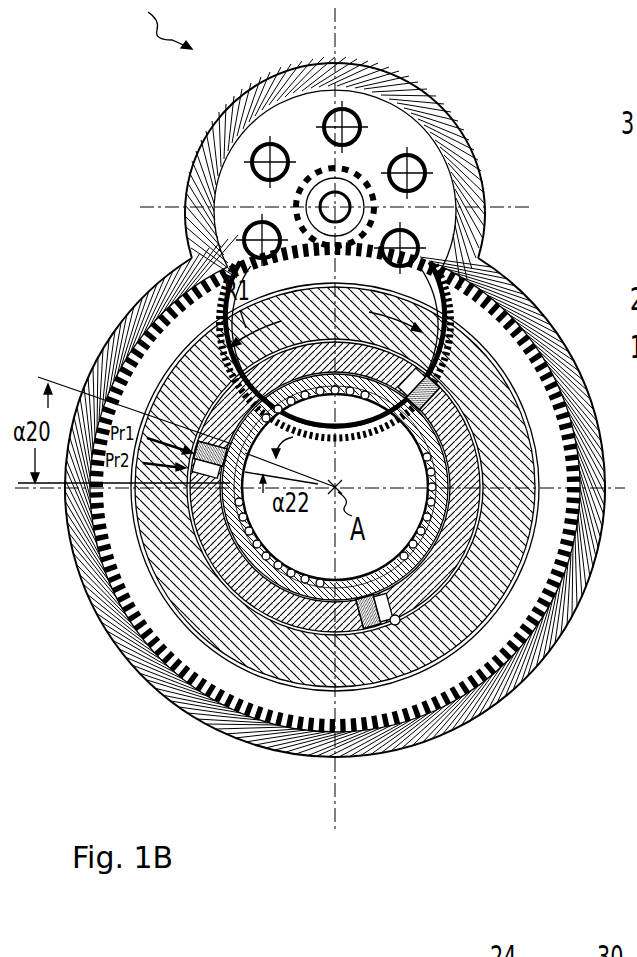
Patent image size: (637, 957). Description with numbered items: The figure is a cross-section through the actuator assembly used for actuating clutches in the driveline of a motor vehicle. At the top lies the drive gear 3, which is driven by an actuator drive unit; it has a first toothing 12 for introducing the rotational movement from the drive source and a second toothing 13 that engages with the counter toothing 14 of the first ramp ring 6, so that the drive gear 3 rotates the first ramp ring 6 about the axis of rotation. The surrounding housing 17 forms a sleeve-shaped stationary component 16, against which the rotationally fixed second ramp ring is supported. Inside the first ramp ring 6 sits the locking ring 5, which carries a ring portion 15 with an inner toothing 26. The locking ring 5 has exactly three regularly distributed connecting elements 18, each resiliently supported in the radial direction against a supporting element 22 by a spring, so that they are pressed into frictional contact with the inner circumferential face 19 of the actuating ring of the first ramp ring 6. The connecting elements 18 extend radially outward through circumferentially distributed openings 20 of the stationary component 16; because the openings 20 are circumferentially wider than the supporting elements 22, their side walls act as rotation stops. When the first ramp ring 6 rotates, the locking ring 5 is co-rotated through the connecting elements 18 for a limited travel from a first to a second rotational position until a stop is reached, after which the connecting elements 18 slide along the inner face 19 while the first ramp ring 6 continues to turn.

The drive gear 3 is at (408, 96).
The locking ring 5 is at (285, 580).
The first ramp ring 6 is at (442, 640).
The first toothing 12 is at (391, 128).
The second toothing 13 is at (358, 163).
The counter toothing 14 is at (520, 645).
The ring portion 15 is at (273, 595).
The stationary component 16 is at (205, 555).
The housing 17 is at (480, 153).
The connecting elements 18 is at (378, 605).
The inner circumferential face 19 is at (395, 595).
The openings 20 is at (463, 320).
The supporting elements 22 is at (420, 372).
The inner toothing 26 is at (420, 462).